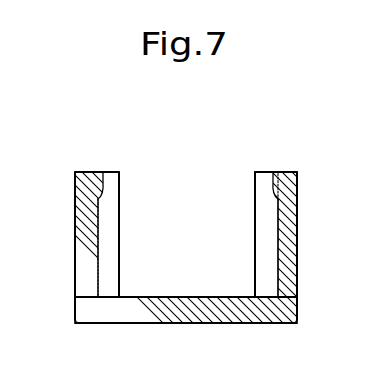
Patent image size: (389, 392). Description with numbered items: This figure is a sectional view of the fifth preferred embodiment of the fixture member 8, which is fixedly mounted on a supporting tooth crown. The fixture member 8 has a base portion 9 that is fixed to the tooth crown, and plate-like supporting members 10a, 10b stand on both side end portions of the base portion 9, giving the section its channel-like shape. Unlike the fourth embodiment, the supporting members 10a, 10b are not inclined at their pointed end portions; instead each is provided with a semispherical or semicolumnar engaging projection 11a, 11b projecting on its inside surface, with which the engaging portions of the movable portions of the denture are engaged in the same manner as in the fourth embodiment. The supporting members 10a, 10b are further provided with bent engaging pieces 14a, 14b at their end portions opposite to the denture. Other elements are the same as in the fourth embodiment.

The fixture member 8 is at (73, 287).
The base portion 9 is at (195, 325).
The plate-like supporting member 10a is at (290, 241).
The plate-like supporting member 10b is at (87, 234).
The engaging projection 11a is at (272, 172).
The engaging projection 11b is at (102, 170).
The bent engaging piece 14a is at (255, 197).
The bent engaging piece 14b is at (115, 195).